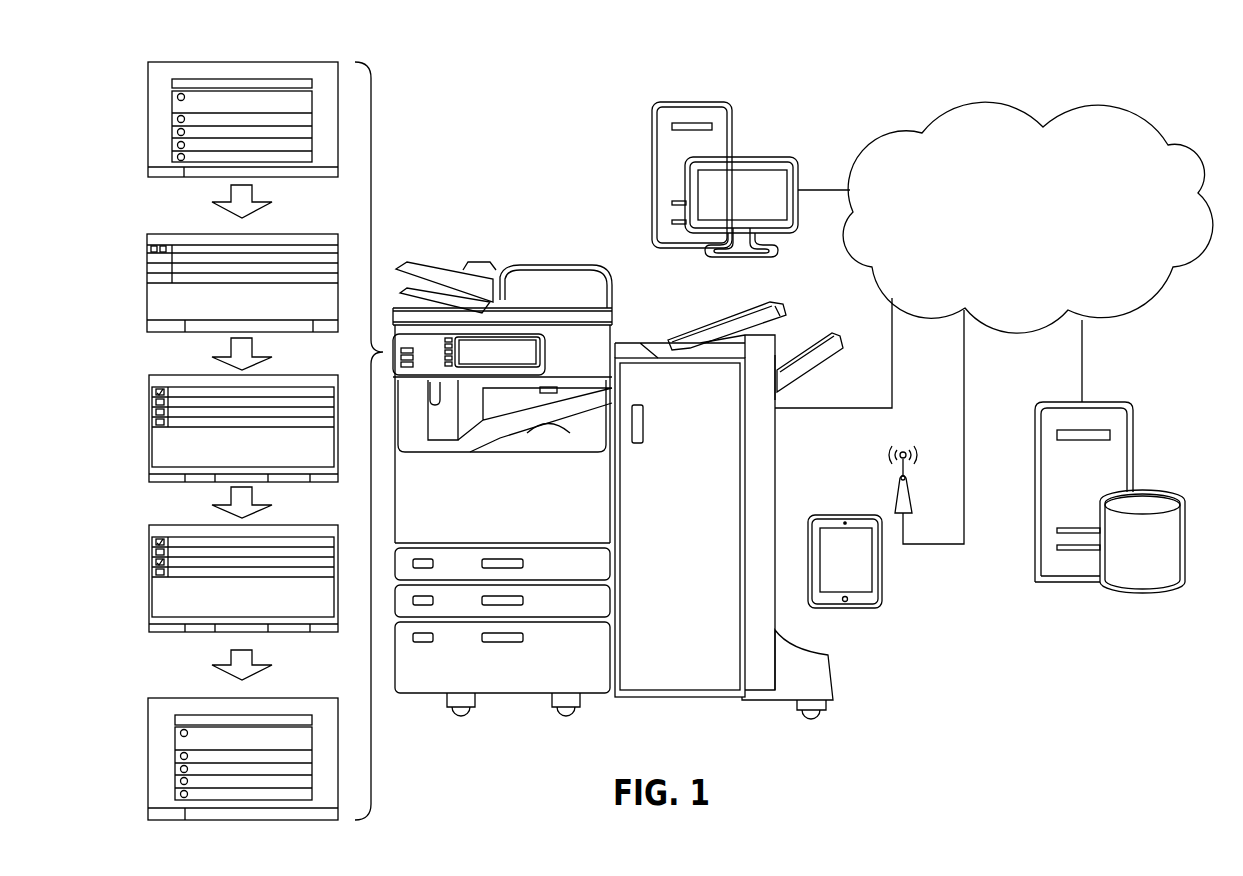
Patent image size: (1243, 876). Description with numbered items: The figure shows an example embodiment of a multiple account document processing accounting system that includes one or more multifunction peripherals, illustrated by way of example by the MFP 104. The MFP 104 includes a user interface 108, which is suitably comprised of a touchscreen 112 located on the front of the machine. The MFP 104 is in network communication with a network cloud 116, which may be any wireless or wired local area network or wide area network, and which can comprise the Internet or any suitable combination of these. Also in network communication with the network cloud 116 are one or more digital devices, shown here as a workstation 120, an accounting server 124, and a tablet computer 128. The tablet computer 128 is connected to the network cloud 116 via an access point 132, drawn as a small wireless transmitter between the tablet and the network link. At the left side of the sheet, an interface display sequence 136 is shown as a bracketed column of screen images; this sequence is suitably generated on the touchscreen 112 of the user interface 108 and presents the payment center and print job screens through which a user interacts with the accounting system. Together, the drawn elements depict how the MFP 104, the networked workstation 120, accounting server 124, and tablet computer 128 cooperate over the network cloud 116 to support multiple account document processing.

The MFP 104 is at (695, 698).
The user interface 108 is at (430, 344).
The touchscreen 112 is at (505, 355).
The network cloud 116 is at (1045, 254).
The workstation 120 is at (699, 112).
The accounting server 124 is at (1160, 583).
The tablet computer 128 is at (858, 569).
The access point 132 is at (912, 486).
The interface display sequence 136 is at (292, 53).